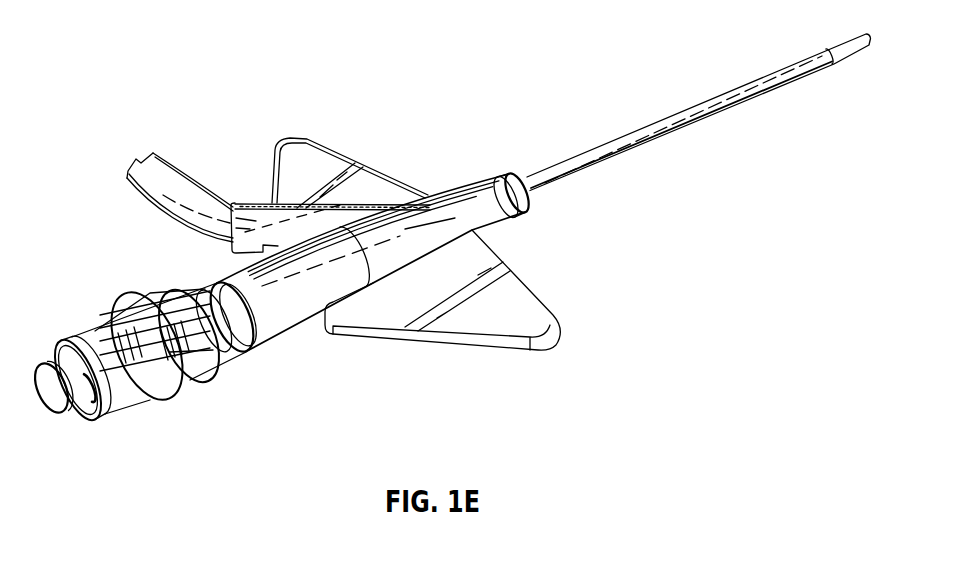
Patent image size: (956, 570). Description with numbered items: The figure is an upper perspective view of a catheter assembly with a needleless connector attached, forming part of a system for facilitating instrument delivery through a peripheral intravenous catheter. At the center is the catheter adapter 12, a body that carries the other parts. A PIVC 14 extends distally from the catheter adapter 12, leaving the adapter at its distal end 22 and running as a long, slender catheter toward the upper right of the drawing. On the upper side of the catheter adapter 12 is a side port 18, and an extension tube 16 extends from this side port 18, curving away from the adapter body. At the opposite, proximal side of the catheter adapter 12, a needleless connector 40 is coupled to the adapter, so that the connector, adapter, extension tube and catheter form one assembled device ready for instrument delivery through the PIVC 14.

The catheter adapter 12 is at (440, 177).
The PIVC 14 is at (787, 72).
The extension tube 16 is at (160, 181).
The side port 18 is at (255, 212).
The distal end 22 is at (514, 180).
The needleless connector 40 is at (153, 302).